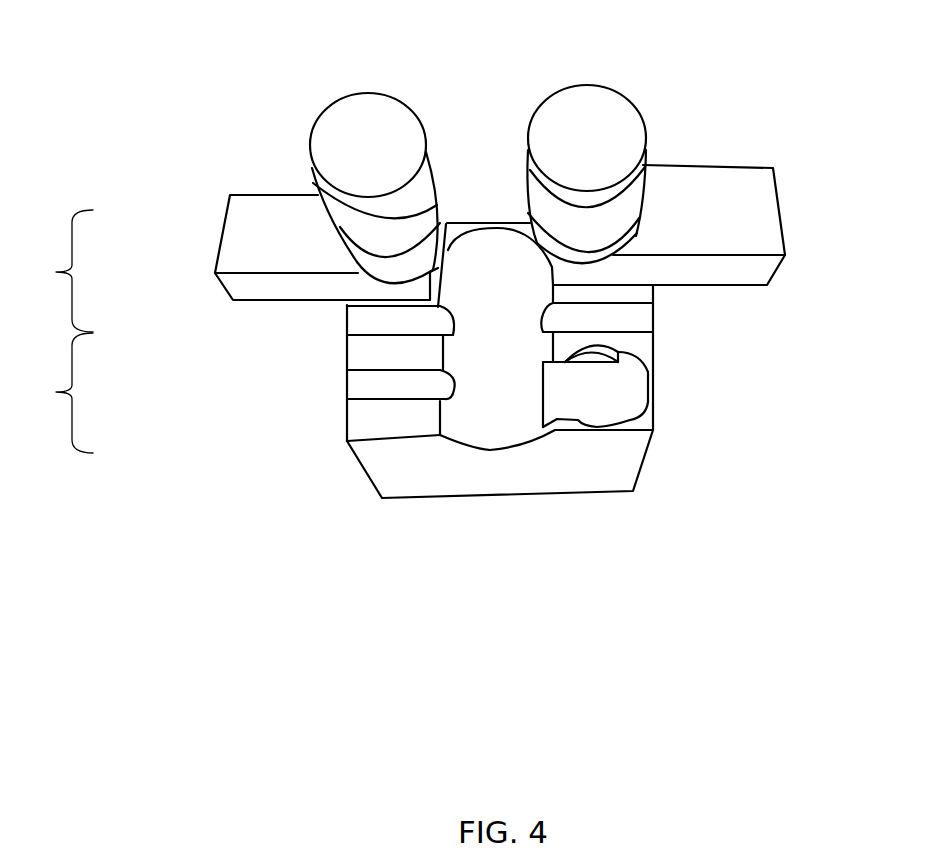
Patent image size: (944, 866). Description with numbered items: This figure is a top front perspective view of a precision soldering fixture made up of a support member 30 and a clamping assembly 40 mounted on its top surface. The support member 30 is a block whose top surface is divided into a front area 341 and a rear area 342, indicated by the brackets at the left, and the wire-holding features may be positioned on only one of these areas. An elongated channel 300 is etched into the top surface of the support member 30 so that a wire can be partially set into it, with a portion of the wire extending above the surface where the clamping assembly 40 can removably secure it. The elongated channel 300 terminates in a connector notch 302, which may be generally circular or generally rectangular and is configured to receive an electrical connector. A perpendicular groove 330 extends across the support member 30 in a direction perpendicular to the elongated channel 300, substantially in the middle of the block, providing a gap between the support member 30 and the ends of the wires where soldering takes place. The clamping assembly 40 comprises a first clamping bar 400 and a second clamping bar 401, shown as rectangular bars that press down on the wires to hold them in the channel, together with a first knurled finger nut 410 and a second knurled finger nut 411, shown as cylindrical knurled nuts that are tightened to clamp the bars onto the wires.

The support member 30 is at (367, 483).
The elongated channel 300 is at (363, 385).
The connector notch 302 is at (627, 402).
The perpendicular groove 330 is at (492, 415).
The front area 341 is at (53, 393).
The rear area 342 is at (53, 271).
The clamping assembly 40 is at (572, 60).
The first clamping bar 400 is at (217, 257).
The second clamping bar 401 is at (783, 228).
The first knurled finger nut 410 is at (317, 122).
The second knurled finger nut 411 is at (643, 125).